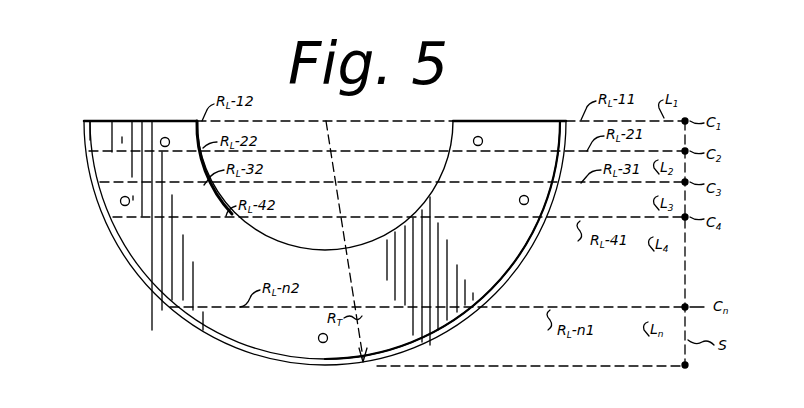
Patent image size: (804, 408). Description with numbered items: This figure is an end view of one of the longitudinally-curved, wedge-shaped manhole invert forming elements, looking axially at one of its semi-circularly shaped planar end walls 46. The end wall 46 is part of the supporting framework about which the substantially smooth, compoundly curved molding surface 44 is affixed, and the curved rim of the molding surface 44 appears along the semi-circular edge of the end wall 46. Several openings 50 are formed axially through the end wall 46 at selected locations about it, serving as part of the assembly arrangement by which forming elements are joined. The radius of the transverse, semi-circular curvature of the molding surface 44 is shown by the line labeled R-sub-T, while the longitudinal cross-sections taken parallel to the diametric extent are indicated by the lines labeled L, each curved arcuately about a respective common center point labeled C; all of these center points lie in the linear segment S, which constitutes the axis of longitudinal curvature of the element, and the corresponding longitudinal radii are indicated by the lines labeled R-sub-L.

The molding surface 44 is at (125, 259).
The end walls 46 is at (493, 258).
The openings 50 is at (168, 138).